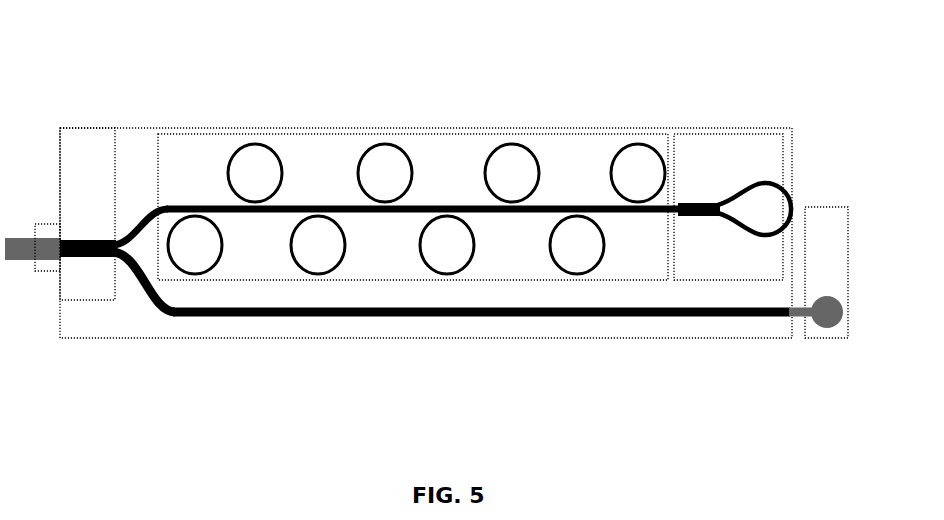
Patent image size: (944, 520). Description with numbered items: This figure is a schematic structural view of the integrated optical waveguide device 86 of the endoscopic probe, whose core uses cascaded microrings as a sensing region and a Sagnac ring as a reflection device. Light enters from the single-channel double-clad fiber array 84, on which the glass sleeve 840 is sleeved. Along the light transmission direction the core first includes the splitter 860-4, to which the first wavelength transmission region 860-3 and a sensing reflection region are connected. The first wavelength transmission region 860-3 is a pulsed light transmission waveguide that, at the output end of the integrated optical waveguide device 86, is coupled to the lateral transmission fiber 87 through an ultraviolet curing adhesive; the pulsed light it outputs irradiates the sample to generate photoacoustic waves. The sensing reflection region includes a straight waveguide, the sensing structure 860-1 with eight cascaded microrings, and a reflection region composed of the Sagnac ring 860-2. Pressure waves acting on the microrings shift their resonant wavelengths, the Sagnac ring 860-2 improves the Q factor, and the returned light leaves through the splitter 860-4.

The single-channel double-clad fiber array 84 is at (20, 237).
The glass sleeve 840 is at (47, 272).
The integrated optical waveguide device 86 is at (467, 339).
The sensing structure 860-1 is at (451, 127).
The Sagnac ring 860-2 is at (747, 127).
The first wavelength transmission region 860-3 is at (313, 318).
The splitter 860-4 is at (88, 127).
The lateral transmission fiber 87 is at (827, 205).